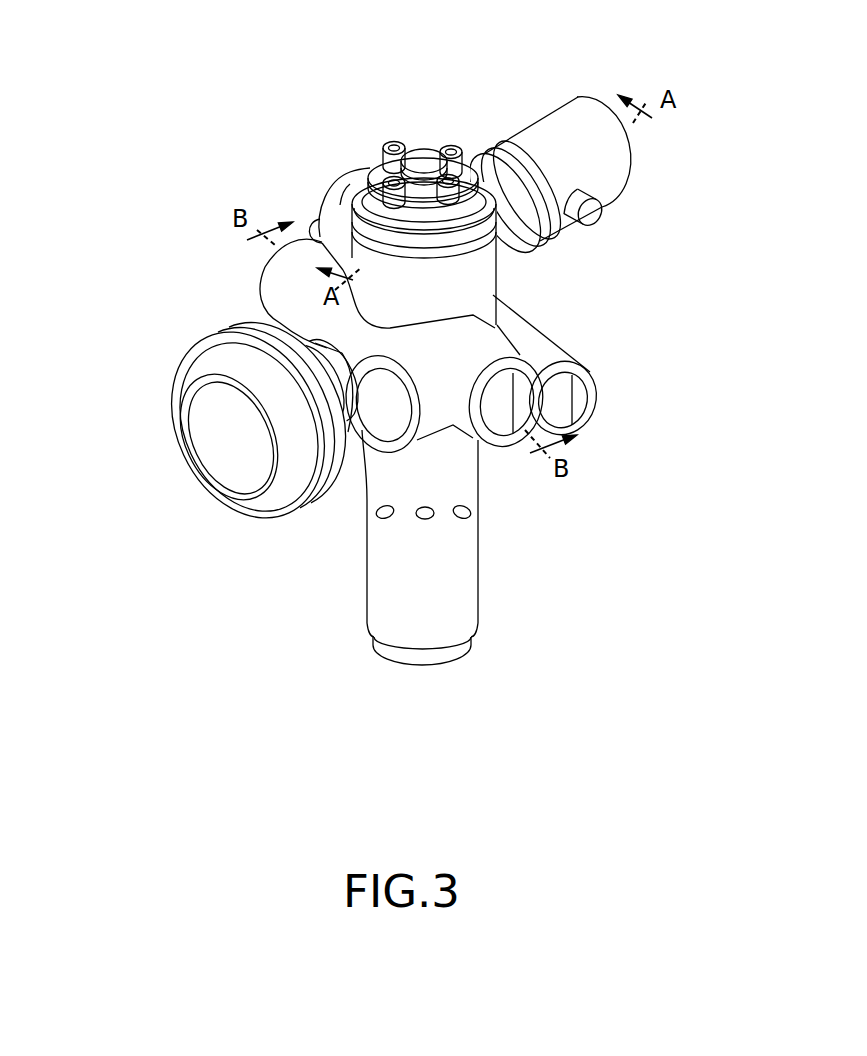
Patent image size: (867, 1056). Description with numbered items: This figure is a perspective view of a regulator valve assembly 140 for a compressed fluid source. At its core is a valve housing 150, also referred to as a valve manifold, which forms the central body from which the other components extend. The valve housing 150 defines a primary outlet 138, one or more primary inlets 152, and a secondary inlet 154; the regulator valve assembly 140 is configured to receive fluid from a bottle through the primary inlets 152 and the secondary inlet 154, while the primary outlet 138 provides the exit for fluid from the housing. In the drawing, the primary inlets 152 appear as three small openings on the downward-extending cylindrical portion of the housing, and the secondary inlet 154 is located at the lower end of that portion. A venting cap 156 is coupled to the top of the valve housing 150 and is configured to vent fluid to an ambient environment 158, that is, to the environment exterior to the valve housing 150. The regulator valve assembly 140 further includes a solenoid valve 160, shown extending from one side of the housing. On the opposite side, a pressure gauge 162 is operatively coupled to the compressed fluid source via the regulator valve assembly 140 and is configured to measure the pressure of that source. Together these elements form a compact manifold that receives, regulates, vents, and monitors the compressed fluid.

The regulator valve assembly 140 is at (189, 148).
The valve housing 150 is at (459, 294).
The ambient environment 158 is at (374, 102).
The venting cap 156 is at (423, 163).
The solenoid valve 160 is at (554, 100).
The pressure gauge 162 is at (180, 421).
The primary outlet 138 is at (390, 428).
The secondary inlet 154 is at (421, 685).
The primary inlets 152 is at (370, 526).